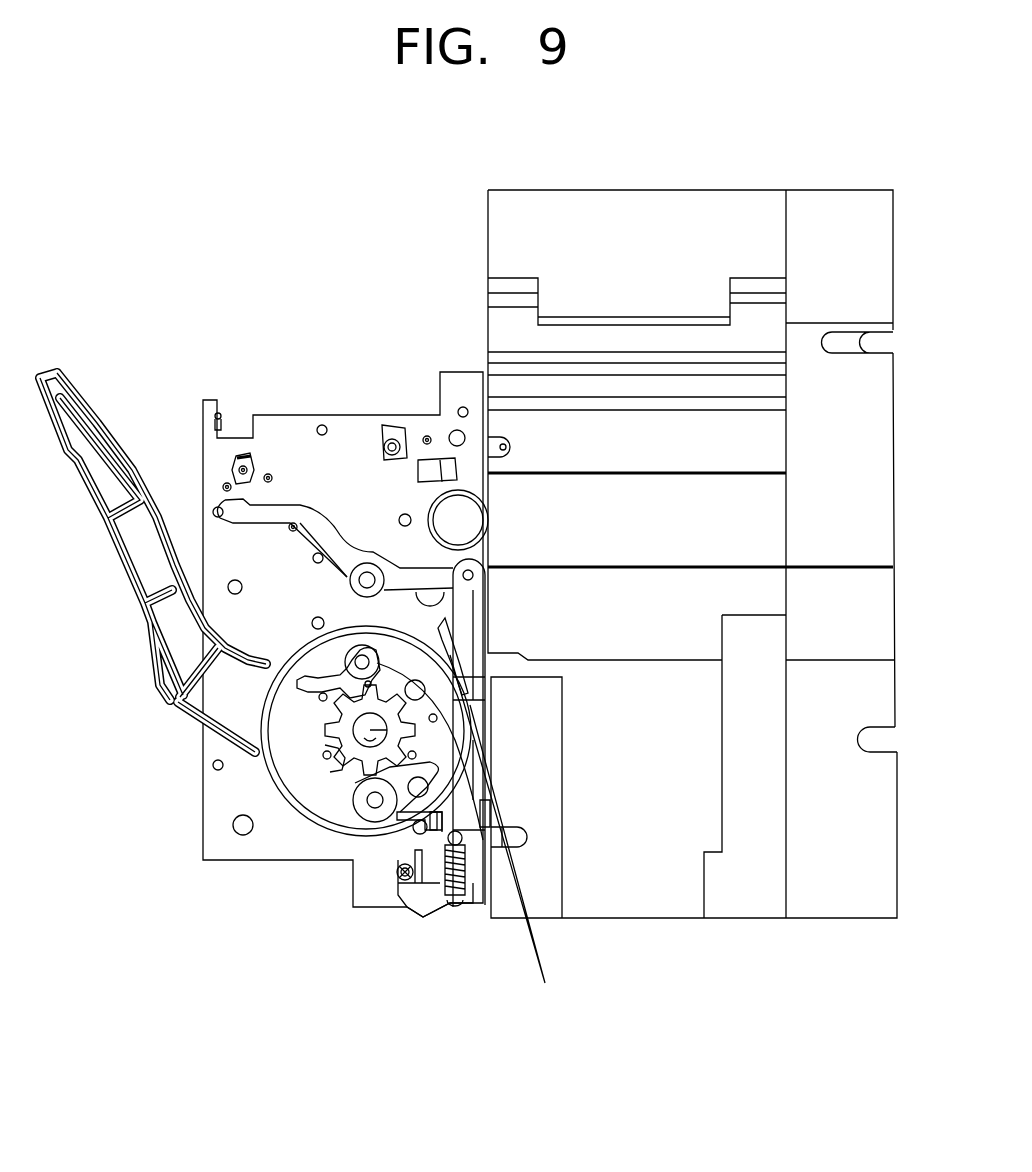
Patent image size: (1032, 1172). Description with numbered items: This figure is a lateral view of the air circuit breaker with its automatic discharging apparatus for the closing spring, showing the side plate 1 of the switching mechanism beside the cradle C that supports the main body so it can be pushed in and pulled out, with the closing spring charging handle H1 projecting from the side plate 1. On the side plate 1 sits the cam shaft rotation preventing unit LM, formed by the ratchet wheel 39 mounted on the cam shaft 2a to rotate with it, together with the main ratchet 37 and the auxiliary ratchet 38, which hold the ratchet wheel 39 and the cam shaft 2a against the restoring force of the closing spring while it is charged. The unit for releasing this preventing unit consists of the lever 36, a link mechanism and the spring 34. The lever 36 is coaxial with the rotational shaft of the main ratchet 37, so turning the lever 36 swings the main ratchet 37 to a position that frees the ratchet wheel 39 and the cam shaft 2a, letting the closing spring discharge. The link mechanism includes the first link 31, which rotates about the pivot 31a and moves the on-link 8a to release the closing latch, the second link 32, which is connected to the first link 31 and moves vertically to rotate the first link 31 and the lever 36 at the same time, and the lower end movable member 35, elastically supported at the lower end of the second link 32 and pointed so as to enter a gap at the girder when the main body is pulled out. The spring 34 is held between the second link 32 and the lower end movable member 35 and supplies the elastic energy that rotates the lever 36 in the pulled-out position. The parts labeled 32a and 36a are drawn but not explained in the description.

The side plate 1 is at (350, 440).
The closing spring charging handle H1 is at (82, 437).
The on-link 8a is at (240, 462).
The first link 31 is at (283, 510).
The pivot 31a is at (352, 580).
The second link 32 is at (465, 605).
The auxiliary ratchet 38 is at (335, 676).
The cam shaft 2a is at (360, 720).
The ratchet wheel 39 is at (335, 758).
The lever 36 is at (437, 763).
The main ratchet 37 is at (420, 808).
The pin 32a is at (410, 822).
The screw 36a is at (405, 872).
The lower end movable member 35 is at (432, 905).
The spring 34 is at (472, 880).
The cam shaft rotation preventing unit LM is at (508, 840).
The cradle C is at (648, 213).